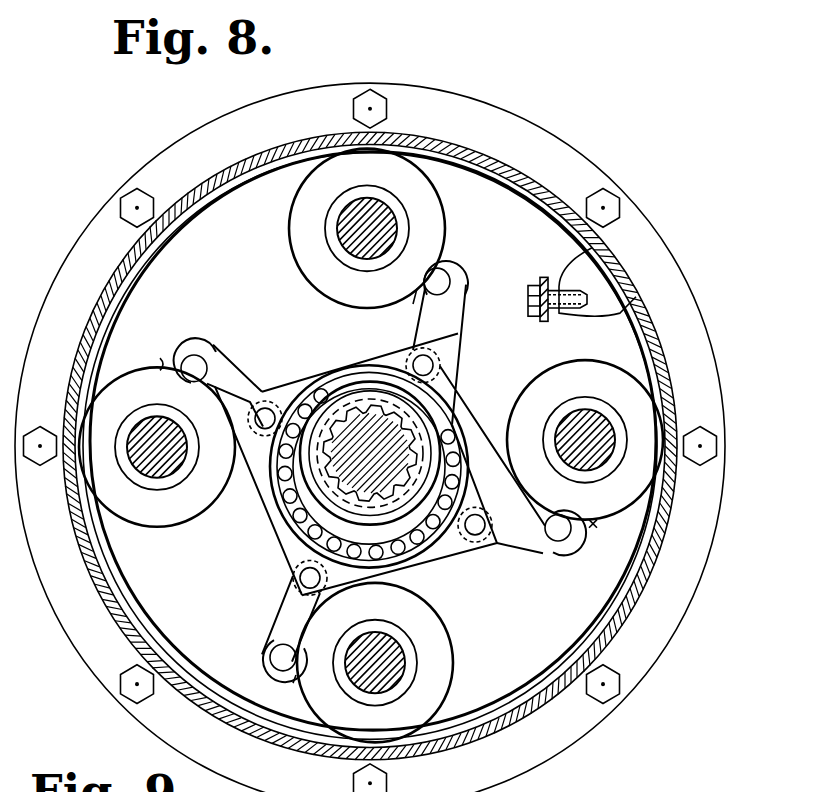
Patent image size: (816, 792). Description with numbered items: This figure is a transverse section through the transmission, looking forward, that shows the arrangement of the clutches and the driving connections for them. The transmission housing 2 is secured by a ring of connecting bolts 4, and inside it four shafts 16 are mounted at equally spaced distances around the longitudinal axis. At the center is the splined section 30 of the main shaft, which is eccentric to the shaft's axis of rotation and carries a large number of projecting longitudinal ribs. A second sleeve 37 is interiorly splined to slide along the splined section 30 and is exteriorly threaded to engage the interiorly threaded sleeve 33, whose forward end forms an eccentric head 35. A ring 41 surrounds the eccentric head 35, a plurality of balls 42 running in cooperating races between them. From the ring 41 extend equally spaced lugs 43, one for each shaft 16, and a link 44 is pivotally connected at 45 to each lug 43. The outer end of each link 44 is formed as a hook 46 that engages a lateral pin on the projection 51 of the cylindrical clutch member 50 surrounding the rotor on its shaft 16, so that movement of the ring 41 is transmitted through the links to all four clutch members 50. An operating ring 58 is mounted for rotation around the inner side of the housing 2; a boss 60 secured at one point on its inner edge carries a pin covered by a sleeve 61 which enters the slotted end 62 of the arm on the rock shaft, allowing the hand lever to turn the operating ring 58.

The transmission housing 2 is at (505, 176).
The connecting bolts 4 is at (383, 116).
The shafts 16 is at (343, 236).
The splined section 30 is at (361, 421).
The sleeve 33 is at (328, 398).
The eccentric head 35 is at (397, 534).
The second sleeve 37 is at (450, 552).
The ring 41 is at (462, 440).
The balls 42 is at (464, 458).
The lugs 43 is at (444, 387).
The link 44 is at (453, 323).
The pivotal connection 45 is at (434, 366).
The hook 46 is at (455, 275).
The clutch member 50 is at (426, 208).
The projection 51 is at (416, 300).
The operating ring 58 is at (126, 600).
The boss 60 is at (590, 311).
The sleeve 61 is at (542, 292).
The slotted end 62 is at (540, 320).